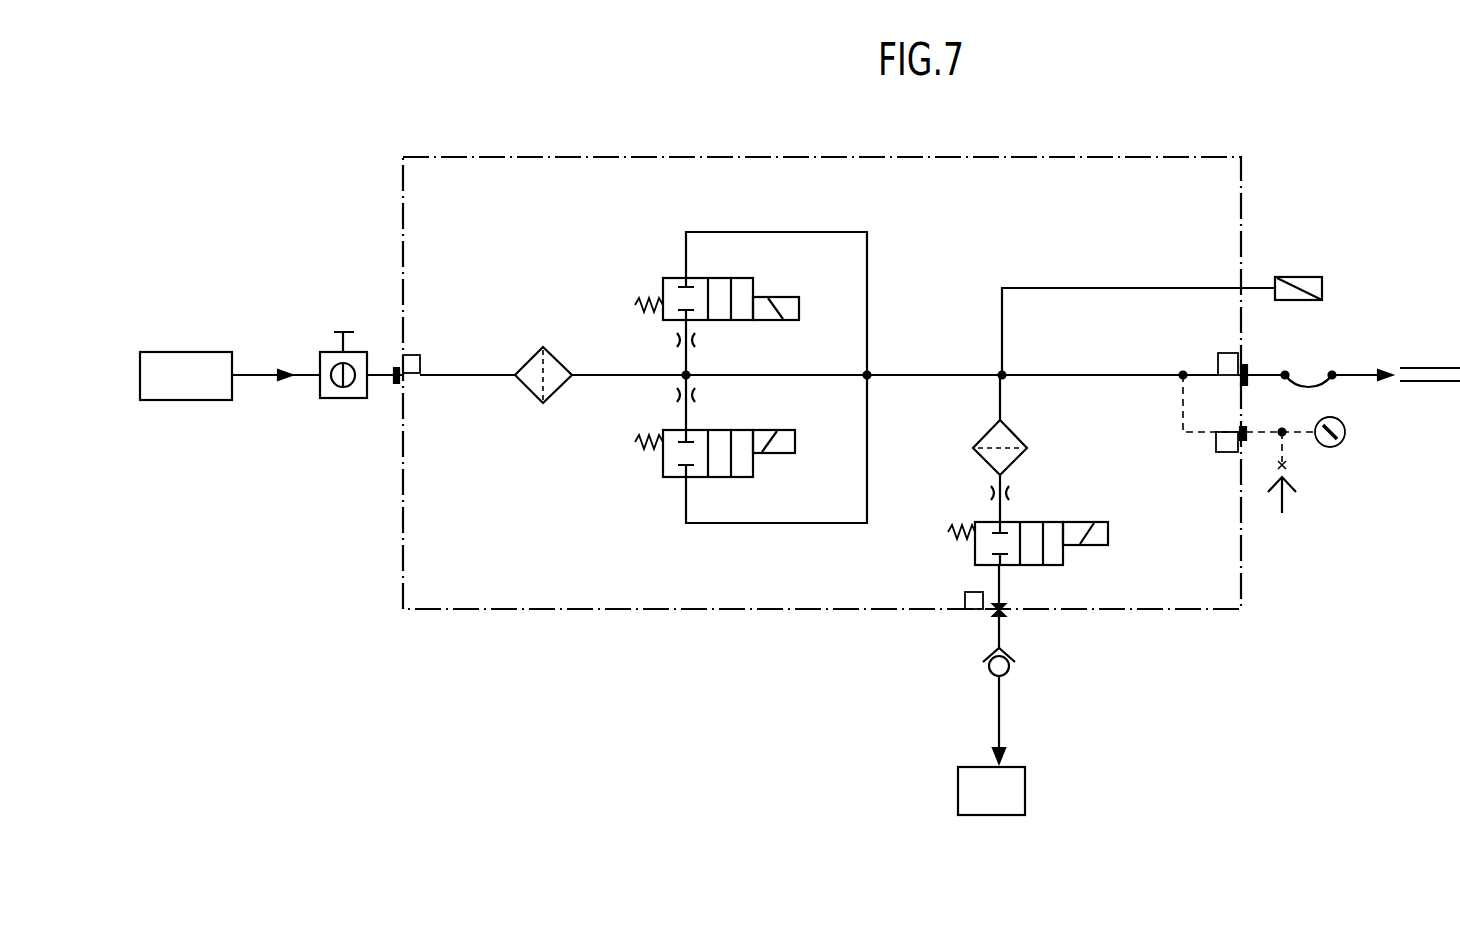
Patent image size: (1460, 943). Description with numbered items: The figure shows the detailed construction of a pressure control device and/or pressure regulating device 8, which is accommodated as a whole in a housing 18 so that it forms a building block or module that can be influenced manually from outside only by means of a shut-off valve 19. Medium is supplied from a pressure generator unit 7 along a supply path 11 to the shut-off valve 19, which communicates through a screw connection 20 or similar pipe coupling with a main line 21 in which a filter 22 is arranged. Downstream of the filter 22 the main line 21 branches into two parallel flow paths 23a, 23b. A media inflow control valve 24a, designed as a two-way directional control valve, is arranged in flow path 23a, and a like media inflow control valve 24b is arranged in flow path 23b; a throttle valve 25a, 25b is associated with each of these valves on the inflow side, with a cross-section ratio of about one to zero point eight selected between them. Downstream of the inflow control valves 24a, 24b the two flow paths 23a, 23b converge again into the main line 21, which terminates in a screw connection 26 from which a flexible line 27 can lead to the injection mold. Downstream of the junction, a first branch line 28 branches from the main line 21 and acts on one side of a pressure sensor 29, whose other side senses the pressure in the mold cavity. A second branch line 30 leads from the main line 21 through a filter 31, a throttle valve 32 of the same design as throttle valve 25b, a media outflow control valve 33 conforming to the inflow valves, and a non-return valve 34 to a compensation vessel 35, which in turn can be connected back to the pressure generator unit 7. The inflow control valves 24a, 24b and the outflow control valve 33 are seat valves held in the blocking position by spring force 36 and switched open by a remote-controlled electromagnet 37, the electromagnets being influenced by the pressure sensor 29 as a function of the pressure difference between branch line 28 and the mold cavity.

The pressure generator unit 7 is at (178, 361).
The pressure control device and/or pressure regulating device 8 is at (1088, 175).
The supply line 11 is at (254, 378).
The housing 18 is at (505, 157).
The shut-off valve 19 is at (342, 400).
The screw connection 20 is at (395, 386).
The main line 21 is at (477, 373).
The filter 22 is at (540, 346).
The flow path 23a is at (753, 232).
The flow path 23b is at (745, 525).
The media inflow control valve 24a is at (668, 276).
The media inflow control valve 24b is at (667, 481).
The throttle valve 25a is at (700, 342).
The throttle valve 25b is at (700, 395).
The screw connection 26 is at (1247, 362).
The flexible line 27 is at (1318, 391).
The first branch line 28 is at (1042, 287).
The pressure sensor 29 is at (1312, 278).
The second branch line 30 is at (1000, 405).
The filter 31 is at (985, 462).
The throttle valve 32 is at (1010, 493).
The media outflow control valve 33 is at (972, 552).
The non-return valve 34 is at (1010, 675).
The compensation vessel 35 is at (1015, 788).
The spring force 36 is at (642, 302).
The electromagnet 37 is at (790, 297).